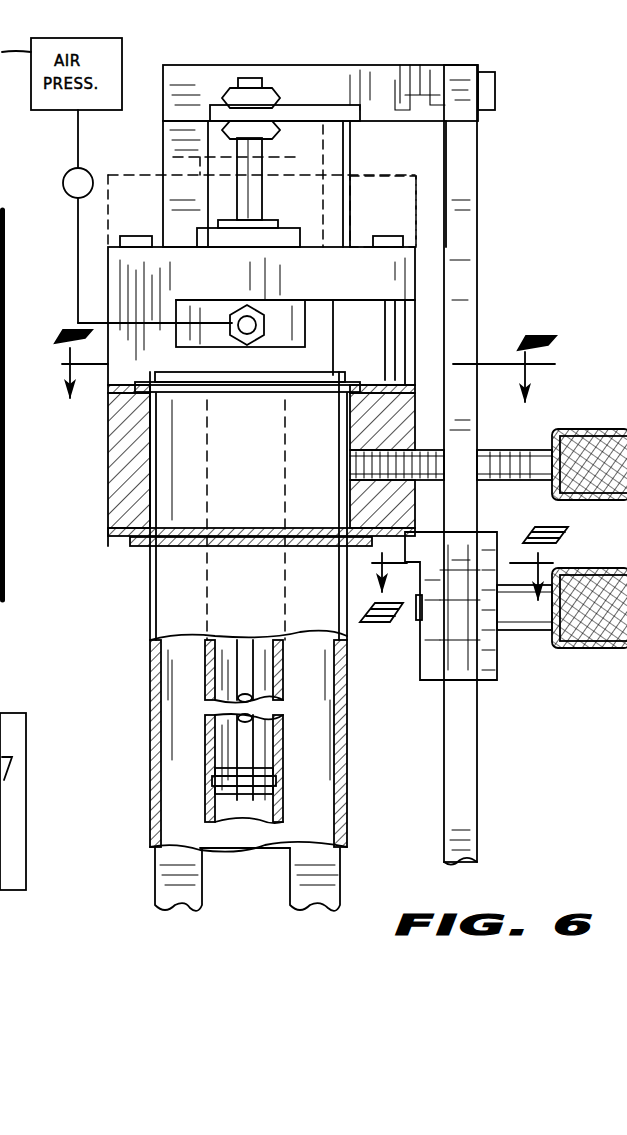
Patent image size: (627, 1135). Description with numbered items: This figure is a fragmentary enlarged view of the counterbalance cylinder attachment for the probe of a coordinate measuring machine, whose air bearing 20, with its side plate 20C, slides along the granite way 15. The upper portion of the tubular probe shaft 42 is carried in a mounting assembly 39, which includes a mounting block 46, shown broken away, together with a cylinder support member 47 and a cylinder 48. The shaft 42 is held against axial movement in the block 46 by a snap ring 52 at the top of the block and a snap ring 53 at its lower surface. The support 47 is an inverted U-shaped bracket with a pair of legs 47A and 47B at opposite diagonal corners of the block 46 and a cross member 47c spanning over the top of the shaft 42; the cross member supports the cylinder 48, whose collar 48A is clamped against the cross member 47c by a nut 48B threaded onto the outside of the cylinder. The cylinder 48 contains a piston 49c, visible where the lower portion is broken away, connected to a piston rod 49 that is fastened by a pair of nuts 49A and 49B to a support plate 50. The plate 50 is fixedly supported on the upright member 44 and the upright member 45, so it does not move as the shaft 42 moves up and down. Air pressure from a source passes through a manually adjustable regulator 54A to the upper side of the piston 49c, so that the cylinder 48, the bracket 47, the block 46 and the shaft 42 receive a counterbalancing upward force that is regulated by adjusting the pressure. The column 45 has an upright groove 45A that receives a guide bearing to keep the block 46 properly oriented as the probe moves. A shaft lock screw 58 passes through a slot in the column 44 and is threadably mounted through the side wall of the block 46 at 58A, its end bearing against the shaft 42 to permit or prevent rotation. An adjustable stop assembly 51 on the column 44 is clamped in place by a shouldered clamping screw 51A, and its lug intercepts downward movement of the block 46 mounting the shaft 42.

The way 15 is at (2, 570).
The air bearing 20 is at (2, 334).
The side plate 20C is at (2, 516).
The mounting assembly 39 is at (105, 538).
The probe shaft 42 is at (150, 826).
The upright member 44 is at (466, 816).
The upright member 45 is at (350, 146).
The groove 45A is at (252, 896).
The mounting block 46 is at (110, 452).
The cylinder support member 47 is at (407, 272).
The leg 47A is at (158, 356).
The leg 47B is at (407, 318).
The cross member 47c is at (345, 248).
The cylinder 48 is at (283, 366).
The collar 48A is at (295, 320).
The nut 48B is at (250, 236).
The piston rod 49 is at (258, 208).
The nut 49A is at (212, 118).
The nut 49B is at (262, 92).
The piston 49c is at (262, 772).
The support plate 50 is at (365, 88).
The adjustable stop assembly 51 is at (500, 686).
The clamping screw 51A is at (530, 636).
The snap ring 52 is at (370, 392).
The snap ring 53 is at (146, 549).
The regulator 54A is at (64, 176).
The shaft lock screw 58 is at (515, 446).
The threaded side wall mounting 58A is at (373, 472).